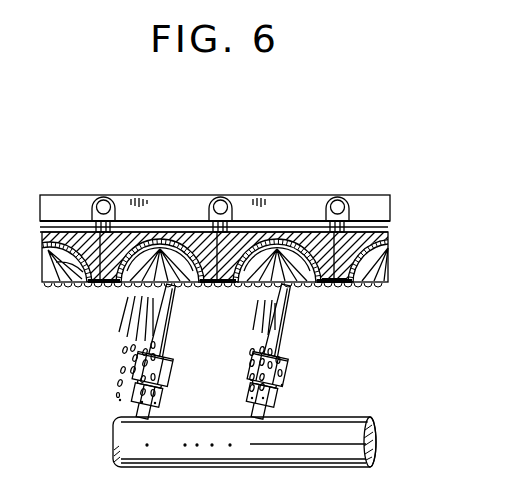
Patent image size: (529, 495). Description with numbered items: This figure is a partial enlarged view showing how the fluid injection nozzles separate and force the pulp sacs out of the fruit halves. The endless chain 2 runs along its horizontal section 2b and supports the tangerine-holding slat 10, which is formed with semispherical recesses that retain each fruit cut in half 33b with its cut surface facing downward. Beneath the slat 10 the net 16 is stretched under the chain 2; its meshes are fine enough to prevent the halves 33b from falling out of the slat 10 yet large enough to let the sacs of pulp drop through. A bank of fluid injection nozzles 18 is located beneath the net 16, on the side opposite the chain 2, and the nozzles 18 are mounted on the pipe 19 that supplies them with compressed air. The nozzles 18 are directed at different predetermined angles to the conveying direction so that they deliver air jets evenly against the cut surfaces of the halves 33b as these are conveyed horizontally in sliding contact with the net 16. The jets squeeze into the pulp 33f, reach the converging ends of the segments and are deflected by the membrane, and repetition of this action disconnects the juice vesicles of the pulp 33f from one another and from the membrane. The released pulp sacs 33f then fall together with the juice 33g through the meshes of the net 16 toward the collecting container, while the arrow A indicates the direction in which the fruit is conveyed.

The endless chain 2 is at (295, 206).
The horizontal section 2b is at (145, 196).
The tangerine-holding slat 10 is at (127, 247).
The fruit cut in half 33b is at (384, 264).
The net 16 is at (337, 284).
The fluid injection nozzle 18 is at (320, 380).
The pipe 19 is at (355, 414).
The juice 33g is at (125, 322).
The pulp sac 33f is at (120, 371).
The direction of travel A is at (444, 321).